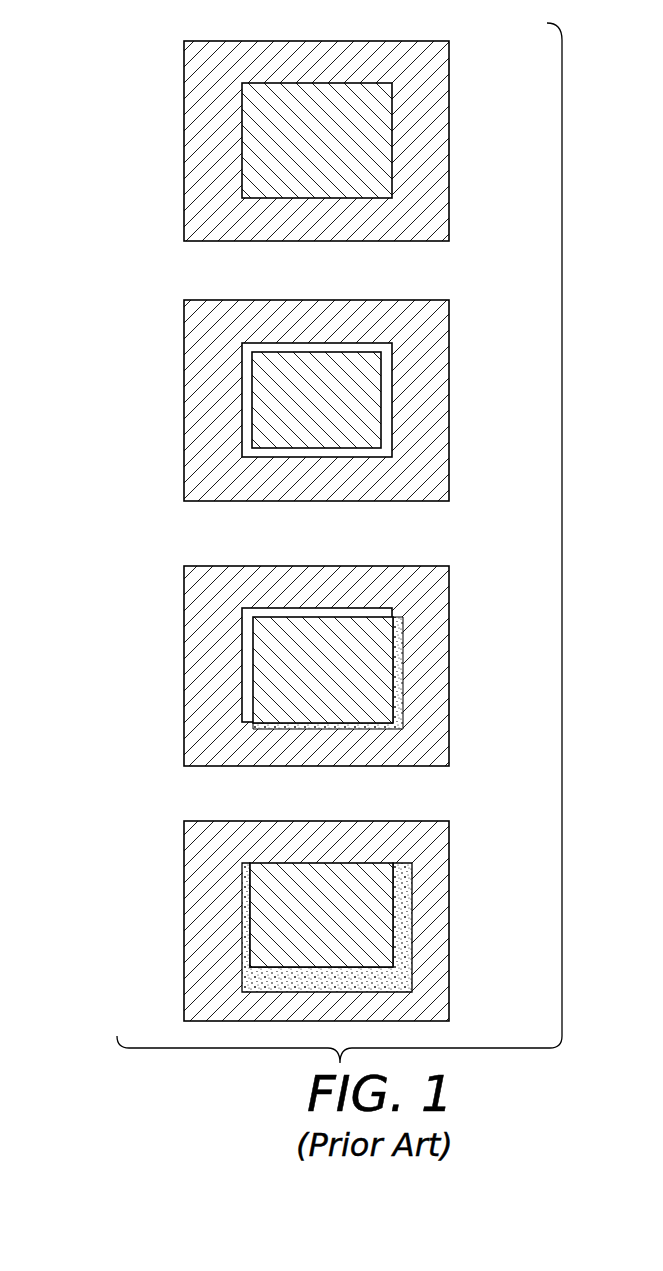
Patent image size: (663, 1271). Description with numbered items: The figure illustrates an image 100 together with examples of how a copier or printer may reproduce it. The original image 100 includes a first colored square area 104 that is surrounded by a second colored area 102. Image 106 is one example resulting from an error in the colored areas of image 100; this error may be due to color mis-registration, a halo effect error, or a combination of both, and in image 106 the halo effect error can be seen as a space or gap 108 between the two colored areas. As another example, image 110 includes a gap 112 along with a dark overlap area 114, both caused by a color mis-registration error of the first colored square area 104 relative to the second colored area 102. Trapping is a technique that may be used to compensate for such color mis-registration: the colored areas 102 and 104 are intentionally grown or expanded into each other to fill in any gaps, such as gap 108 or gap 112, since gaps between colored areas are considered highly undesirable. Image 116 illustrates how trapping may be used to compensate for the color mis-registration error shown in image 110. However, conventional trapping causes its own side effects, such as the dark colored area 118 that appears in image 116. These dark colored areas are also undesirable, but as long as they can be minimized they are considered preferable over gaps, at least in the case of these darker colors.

The image 100 is at (285, 141).
The second colored area 102 is at (430, 79).
The first colored square area 104 is at (373, 163).
The image 106 is at (279, 400).
The gap 108 is at (387, 399).
The image 110 is at (278, 649).
The gap 112 is at (323, 615).
The dark overlap area 114 is at (403, 697).
The image 116 is at (279, 921).
The dark colored area 118 is at (402, 886).